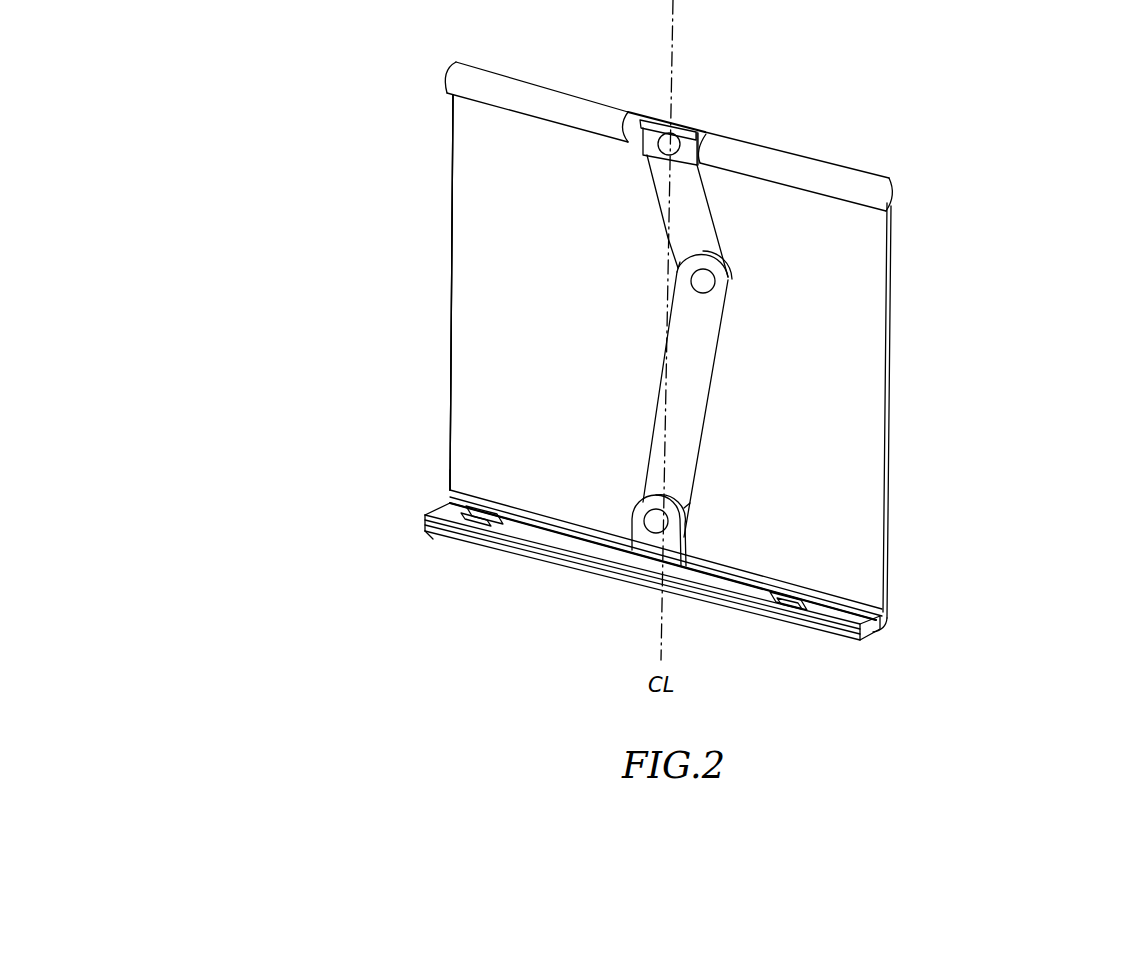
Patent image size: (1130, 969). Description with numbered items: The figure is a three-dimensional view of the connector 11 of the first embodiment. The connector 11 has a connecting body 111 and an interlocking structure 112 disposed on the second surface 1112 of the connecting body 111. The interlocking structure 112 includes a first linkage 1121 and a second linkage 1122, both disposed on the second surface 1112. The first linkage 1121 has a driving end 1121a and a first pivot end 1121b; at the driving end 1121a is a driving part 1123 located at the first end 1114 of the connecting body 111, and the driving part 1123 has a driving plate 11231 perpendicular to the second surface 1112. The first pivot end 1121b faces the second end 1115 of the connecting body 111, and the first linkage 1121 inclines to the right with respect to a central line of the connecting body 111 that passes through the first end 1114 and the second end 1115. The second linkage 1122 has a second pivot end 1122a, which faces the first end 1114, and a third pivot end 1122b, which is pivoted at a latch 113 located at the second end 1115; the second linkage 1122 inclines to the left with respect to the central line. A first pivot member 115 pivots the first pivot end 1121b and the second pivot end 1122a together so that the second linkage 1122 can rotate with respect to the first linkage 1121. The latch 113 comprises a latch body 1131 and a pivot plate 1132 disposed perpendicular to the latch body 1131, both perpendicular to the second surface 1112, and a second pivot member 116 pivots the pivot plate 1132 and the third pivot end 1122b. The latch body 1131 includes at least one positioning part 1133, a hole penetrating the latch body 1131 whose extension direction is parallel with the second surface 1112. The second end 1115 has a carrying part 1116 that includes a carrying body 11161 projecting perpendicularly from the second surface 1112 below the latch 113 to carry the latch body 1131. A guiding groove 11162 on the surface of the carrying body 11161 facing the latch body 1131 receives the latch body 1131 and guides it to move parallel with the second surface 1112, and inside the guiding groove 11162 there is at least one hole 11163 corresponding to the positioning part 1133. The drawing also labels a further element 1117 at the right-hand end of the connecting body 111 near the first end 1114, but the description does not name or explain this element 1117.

The connector 11 is at (1098, 59).
The connecting body 111 is at (452, 296).
The second surface 1112 is at (480, 172).
The first end 1114 is at (424, 56).
The second end 1115 is at (420, 483).
The carrying part 1116 is at (408, 542).
The carrying body 11161 is at (445, 539).
The guiding groove 11162 is at (445, 522).
The hole 11163 is at (475, 511).
The roller 1117 is at (890, 197).
The interlocking structure 112 is at (645, 275).
The first linkage 1121 is at (719, 230).
The driving end 1121a is at (635, 103).
The first pivot end 1121b is at (744, 279).
The second linkage 1122 is at (716, 412).
The second pivot end 1122a is at (668, 268).
The third pivot end 1122b is at (614, 493).
The driving part 1123 is at (742, 118).
The driving plate 11231 is at (686, 120).
The latch 113 is at (644, 593).
The latch body 1131 is at (887, 623).
The pivot plate 1132 is at (684, 508).
The positioning part 1133 is at (487, 525).
The first pivot member 115 is at (764, 309).
The second pivot member 116 is at (650, 512).